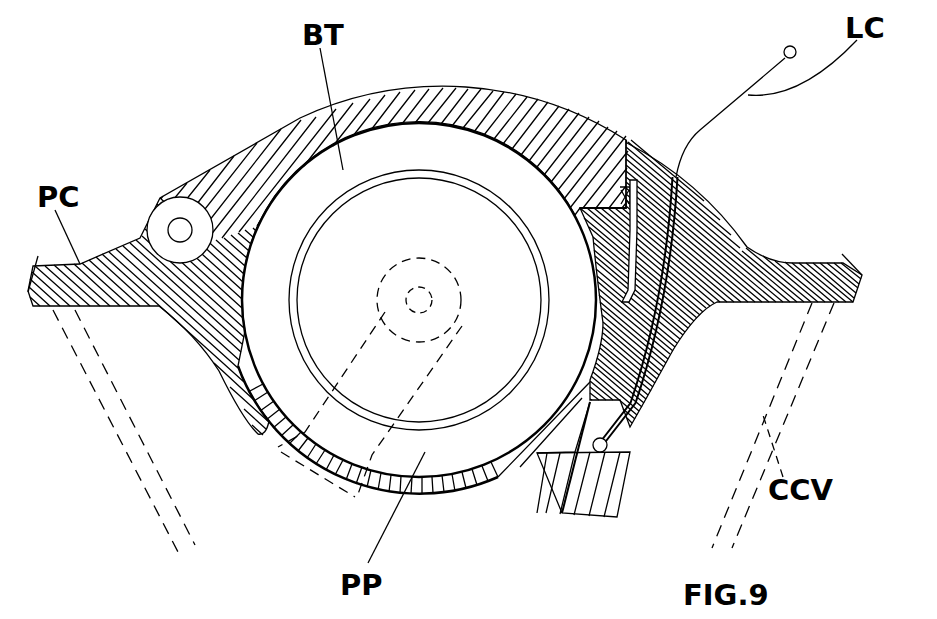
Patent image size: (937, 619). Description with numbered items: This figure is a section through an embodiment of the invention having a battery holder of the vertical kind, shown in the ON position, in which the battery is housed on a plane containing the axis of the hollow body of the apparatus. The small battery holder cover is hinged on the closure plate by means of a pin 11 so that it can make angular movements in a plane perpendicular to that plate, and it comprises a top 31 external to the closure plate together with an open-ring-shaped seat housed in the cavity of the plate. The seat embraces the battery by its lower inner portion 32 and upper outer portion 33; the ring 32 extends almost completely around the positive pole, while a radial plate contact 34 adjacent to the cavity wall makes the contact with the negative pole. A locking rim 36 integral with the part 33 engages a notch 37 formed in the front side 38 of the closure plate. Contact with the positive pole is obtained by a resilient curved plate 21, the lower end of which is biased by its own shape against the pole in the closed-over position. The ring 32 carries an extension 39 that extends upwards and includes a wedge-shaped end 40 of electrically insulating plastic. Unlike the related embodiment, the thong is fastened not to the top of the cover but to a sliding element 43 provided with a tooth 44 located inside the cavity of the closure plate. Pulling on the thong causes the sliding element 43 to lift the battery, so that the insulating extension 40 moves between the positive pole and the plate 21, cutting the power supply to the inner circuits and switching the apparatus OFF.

The pin 11 is at (177, 225).
The resilient curved plate 21 is at (686, 200).
The top 31 is at (472, 90).
The lower inner portion 32 is at (233, 337).
The upper outer portion 33 is at (583, 165).
The radial plate contact 34 is at (310, 490).
The locking rim 36 is at (623, 197).
The notch 37 is at (633, 180).
The front side 38 is at (665, 203).
The extension 39 is at (430, 492).
The wedge-shaped end 40 is at (500, 478).
The sliding element 43 is at (620, 477).
The tooth 44 is at (557, 452).